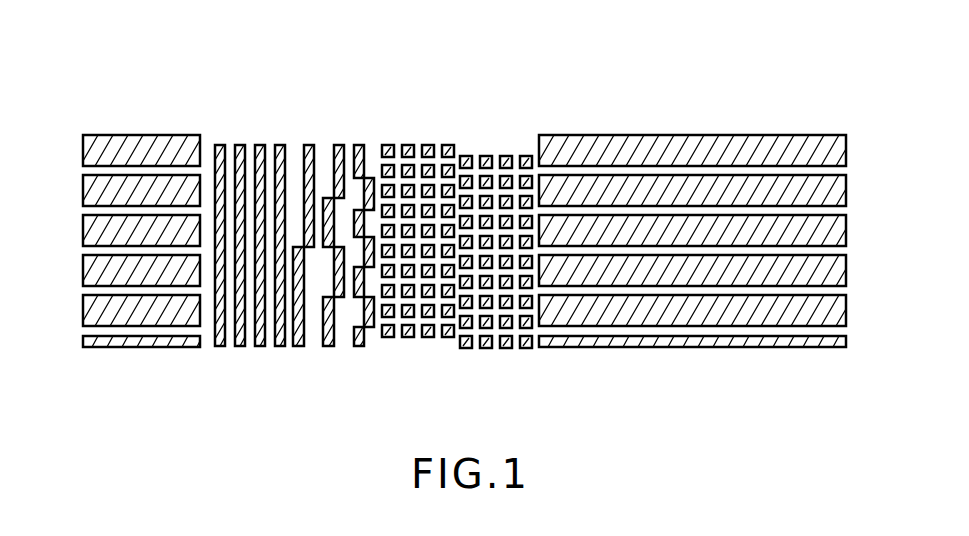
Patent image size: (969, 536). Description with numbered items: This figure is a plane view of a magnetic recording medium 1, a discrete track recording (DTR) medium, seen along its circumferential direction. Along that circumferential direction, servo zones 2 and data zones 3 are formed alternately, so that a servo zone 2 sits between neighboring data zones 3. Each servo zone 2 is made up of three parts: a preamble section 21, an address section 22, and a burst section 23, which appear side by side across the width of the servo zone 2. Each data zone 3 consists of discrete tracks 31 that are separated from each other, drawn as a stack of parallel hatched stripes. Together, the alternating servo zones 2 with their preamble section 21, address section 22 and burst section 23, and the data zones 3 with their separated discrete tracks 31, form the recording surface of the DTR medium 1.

The magnetic recording medium 1 is at (196, 98).
The servo zone 2 is at (530, 123).
The data zone 3 is at (847, 123).
The preamble section 21 is at (213, 362).
The address section 22 is at (290, 362).
The burst section 23 is at (380, 362).
The discrete track 31 is at (847, 150).